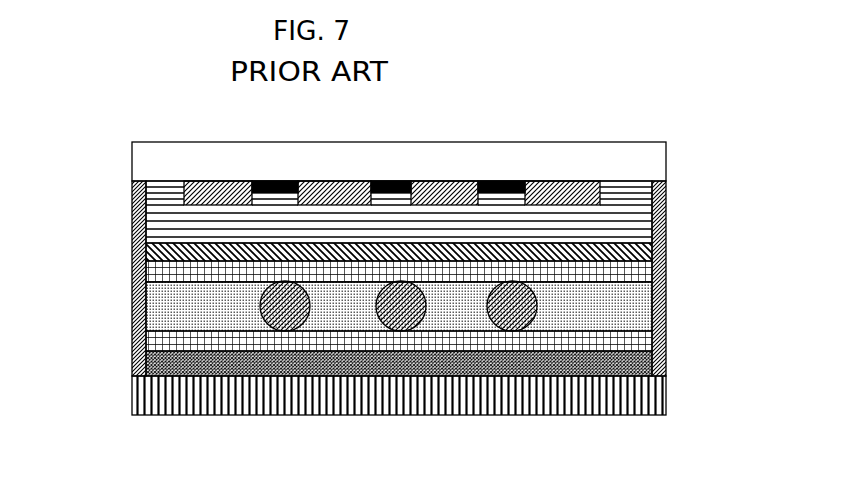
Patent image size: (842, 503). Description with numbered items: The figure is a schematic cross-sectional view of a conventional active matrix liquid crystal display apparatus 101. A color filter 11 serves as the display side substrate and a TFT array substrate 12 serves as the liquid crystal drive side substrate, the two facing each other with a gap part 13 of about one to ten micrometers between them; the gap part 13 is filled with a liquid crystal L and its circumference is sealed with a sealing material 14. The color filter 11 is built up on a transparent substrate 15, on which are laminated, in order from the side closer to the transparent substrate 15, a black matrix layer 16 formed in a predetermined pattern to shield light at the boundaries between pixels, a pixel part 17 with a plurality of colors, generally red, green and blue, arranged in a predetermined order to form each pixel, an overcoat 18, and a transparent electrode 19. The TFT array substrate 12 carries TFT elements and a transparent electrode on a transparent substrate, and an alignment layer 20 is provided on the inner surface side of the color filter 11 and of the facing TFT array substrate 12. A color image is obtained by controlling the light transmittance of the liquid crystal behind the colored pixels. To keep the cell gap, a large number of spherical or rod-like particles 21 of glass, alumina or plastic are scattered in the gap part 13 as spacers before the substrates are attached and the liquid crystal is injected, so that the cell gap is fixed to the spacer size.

The liquid crystal display apparatus 101 is at (128, 121).
The color filter 11 is at (103, 138).
The TFT array substrate 12 is at (160, 357).
The gap part 13 is at (348, 310).
The sealing material 14 is at (645, 303).
The transparent substrate 15 is at (630, 157).
The black matrix layer 16 is at (508, 172).
The pixel part 17 is at (580, 177).
The overcoat 18 is at (633, 218).
The transparent electrode 19 is at (645, 237).
The alignment layer 20 is at (645, 262).
The particles 21 is at (500, 318).